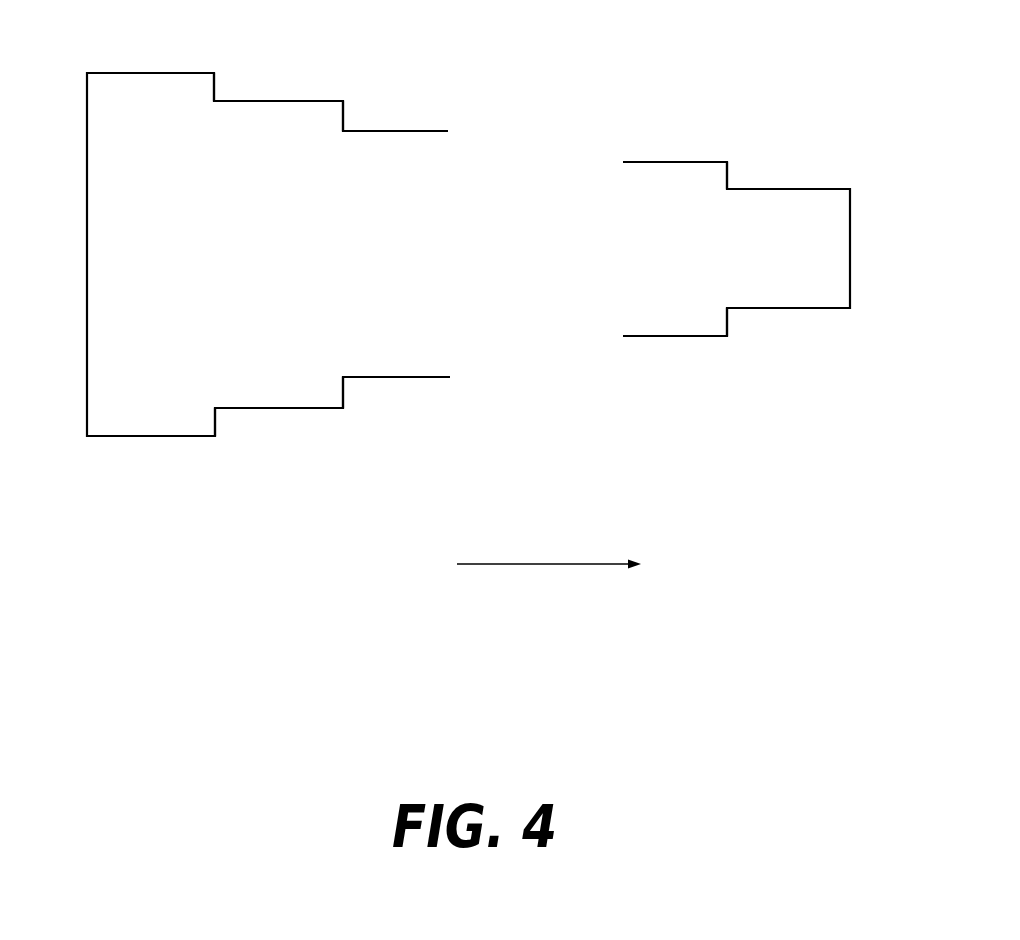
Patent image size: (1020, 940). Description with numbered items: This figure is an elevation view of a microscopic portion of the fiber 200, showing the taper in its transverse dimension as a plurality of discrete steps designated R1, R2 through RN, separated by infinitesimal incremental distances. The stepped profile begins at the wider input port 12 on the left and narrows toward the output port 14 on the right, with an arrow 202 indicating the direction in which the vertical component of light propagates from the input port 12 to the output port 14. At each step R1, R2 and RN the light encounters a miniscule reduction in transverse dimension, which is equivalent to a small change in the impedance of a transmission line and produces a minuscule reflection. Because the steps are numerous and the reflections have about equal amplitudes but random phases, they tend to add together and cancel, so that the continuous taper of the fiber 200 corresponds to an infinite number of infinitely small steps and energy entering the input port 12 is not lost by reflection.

The input port 12 is at (87, 420).
The output port 14 is at (850, 288).
The fiber 200 is at (622, 70).
The insertion direction arrow 202 is at (530, 564).
The first discrete step R1 is at (215, 88).
The second discrete step R2 is at (343, 125).
The Nth discrete step RN is at (728, 175).